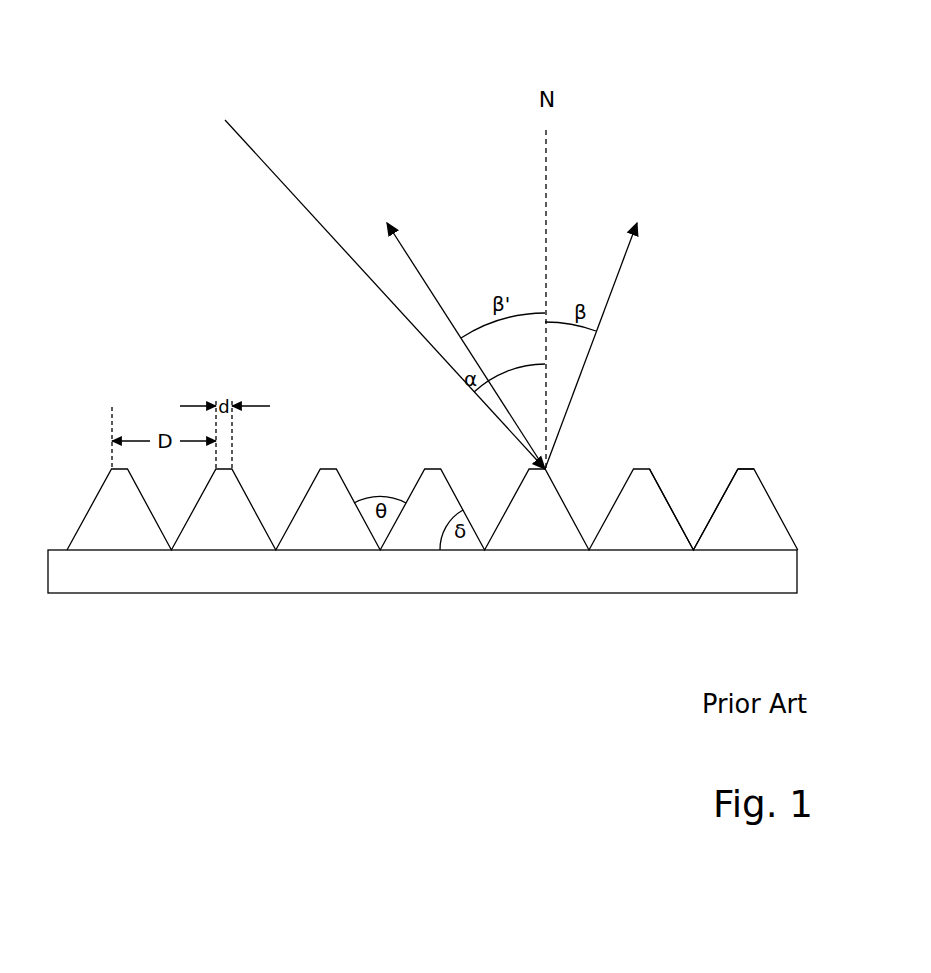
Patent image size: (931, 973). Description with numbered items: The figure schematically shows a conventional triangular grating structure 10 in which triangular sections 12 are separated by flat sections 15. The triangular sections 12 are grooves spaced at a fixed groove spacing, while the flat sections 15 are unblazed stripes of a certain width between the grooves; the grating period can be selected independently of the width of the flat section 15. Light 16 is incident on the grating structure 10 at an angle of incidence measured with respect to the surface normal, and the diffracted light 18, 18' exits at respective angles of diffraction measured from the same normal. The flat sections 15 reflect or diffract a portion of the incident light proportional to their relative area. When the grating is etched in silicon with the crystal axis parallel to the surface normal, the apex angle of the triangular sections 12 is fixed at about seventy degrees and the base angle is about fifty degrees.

The triangular grating structure 10 is at (230, 623).
The triangular sections 12 is at (693, 550).
The flat sections 15 is at (743, 469).
The light 16 is at (242, 167).
The diffracted light 18 is at (645, 331).
The diffracted light 18' is at (451, 323).